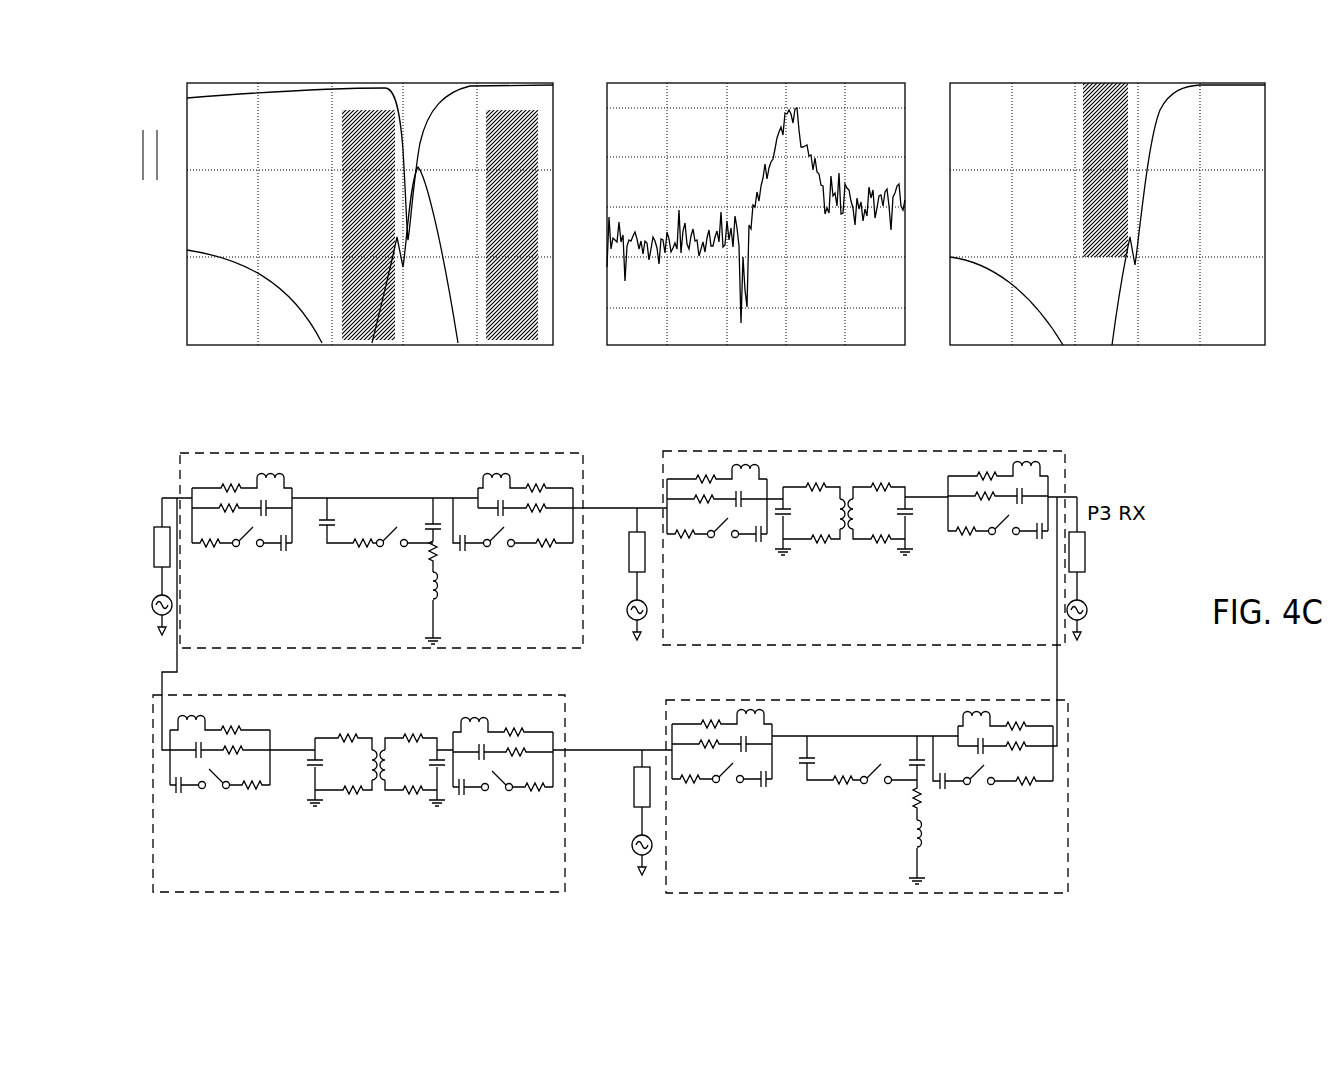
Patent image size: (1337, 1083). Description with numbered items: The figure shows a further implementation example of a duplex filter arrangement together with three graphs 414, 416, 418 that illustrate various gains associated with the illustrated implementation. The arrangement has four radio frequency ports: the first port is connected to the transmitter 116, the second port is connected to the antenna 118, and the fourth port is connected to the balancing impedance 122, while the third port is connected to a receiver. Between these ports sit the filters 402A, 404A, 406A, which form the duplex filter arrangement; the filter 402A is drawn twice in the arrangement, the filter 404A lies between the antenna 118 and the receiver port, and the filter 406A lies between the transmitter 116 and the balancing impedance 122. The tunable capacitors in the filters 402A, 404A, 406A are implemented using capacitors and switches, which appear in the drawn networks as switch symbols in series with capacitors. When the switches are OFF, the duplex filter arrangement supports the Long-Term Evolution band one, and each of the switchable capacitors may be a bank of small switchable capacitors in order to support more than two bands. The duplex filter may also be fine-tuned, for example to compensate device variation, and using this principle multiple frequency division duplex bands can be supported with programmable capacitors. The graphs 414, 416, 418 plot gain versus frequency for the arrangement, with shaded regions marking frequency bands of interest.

The graph 414 is at (413, 79).
The graph 416 is at (722, 79).
The graph 418 is at (972, 79).
The transmitter 116 is at (142, 472).
The antenna 118 is at (622, 446).
The balancing impedance 122 is at (610, 712).
The filter 402A is at (375, 467).
The filter 404A is at (818, 465).
The filter 406A is at (250, 892).